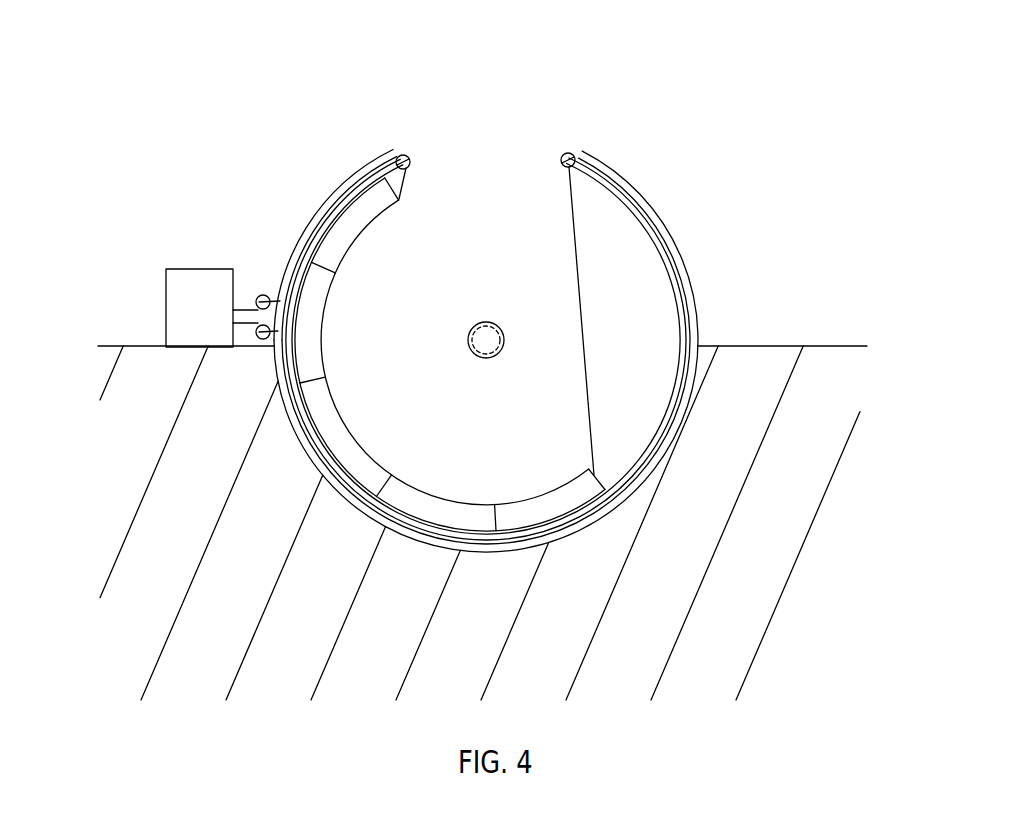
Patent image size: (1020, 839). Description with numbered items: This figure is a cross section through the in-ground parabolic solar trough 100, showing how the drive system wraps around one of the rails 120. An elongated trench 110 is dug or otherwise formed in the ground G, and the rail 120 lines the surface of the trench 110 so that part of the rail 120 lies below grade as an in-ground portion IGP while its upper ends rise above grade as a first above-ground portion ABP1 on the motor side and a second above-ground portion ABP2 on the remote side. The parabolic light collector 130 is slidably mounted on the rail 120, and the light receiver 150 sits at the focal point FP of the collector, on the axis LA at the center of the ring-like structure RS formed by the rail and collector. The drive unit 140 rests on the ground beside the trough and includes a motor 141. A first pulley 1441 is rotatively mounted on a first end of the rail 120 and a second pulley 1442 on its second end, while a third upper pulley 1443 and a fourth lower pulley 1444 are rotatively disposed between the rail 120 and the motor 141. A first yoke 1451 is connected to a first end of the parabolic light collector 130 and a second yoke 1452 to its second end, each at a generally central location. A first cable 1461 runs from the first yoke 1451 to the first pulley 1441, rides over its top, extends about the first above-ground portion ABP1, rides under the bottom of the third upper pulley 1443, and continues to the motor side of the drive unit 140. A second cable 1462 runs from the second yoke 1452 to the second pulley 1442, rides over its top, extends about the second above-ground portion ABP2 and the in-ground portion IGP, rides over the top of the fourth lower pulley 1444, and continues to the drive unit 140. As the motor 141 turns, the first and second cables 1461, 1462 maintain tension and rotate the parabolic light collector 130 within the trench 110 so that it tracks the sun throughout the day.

The in-ground parabolic solar trough 100 is at (400, 48).
The trench 110 is at (703, 345).
The rail 120 is at (693, 284).
The parabolic light collector 130 is at (404, 205).
The drive unit 140 is at (184, 238).
The motor 141 is at (166, 306).
The first pulley 1441 is at (407, 152).
The second pulley 1442 is at (565, 152).
The third upper pulley 1443 is at (264, 294).
The fourth lower pulley 1444 is at (259, 340).
The first yoke 1451 is at (406, 176).
The second yoke 1452 is at (596, 466).
The first cable 1461 is at (357, 181).
The second cable 1462 is at (660, 224).
The light receiver 150 is at (488, 358).
The first above-ground portion ABP1 is at (326, 239).
The second above-ground portion ABP2 is at (501, 351).
The longitudinal axis LA is at (488, 338).
The focal point FP is at (500, 328).
The ring structure RS is at (343, 393).
The in-ground portion IGP is at (549, 548).
The ground G is at (813, 451).